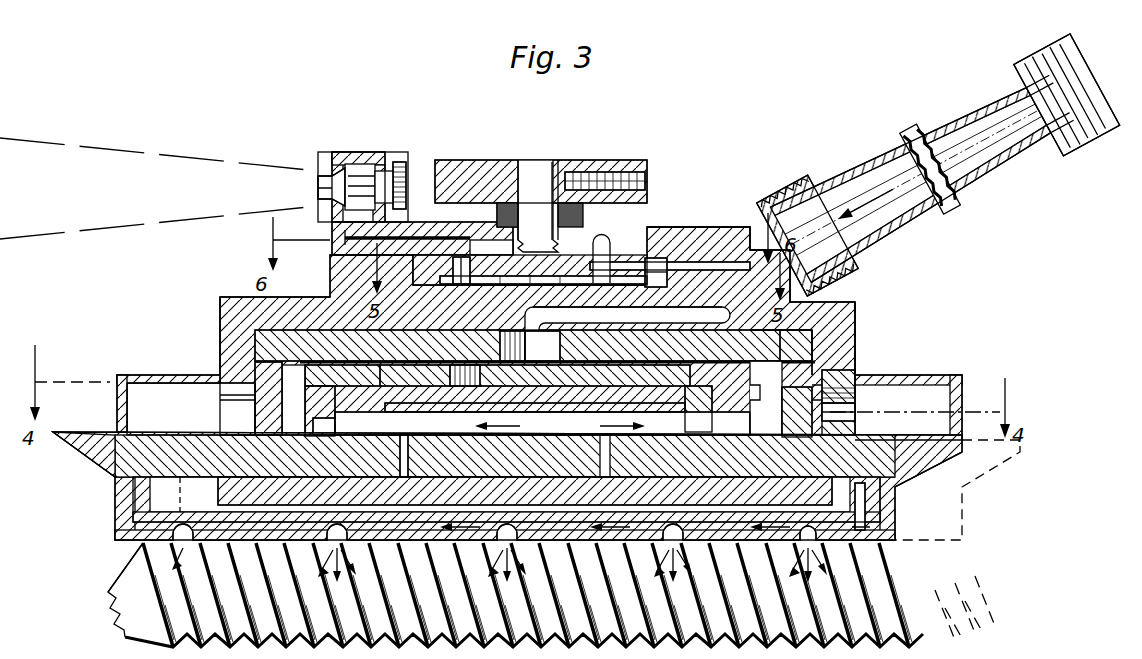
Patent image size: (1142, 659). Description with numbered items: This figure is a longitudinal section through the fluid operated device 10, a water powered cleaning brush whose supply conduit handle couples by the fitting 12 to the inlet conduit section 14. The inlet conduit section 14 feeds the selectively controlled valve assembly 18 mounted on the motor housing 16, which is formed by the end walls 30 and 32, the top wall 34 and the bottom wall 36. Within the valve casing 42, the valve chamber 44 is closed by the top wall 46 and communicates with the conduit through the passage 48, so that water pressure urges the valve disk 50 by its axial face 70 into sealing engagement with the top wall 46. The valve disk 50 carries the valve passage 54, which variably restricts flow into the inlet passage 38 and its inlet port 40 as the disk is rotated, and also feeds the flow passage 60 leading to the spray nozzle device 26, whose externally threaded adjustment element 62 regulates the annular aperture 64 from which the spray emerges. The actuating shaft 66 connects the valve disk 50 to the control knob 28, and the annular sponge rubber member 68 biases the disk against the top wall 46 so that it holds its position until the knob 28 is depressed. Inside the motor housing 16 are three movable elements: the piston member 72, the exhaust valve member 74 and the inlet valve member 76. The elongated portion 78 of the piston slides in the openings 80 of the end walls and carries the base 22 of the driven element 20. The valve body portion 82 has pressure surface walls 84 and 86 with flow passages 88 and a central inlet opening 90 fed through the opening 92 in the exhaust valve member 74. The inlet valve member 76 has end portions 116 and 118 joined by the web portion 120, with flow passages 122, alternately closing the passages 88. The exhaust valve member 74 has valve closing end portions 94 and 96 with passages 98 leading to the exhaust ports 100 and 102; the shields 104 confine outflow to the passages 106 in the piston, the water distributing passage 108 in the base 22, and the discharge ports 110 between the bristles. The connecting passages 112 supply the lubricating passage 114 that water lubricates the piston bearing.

The fluid operated device 10 is at (314, 167).
The fitting 12 is at (1034, 52).
The inlet conduit section 14 is at (858, 172).
The motor housing 16 is at (512, 331).
The valve assembly 18 is at (706, 220).
The driven element 20 is at (928, 603).
The base 22 is at (115, 505).
The spray nozzle device 26 is at (362, 148).
The control knob 28 is at (607, 180).
The end wall 30 is at (847, 346).
The end wall 32 is at (232, 340).
The top wall 34 is at (802, 302).
The bottom wall 36 is at (583, 500).
The inlet passage 38 is at (642, 320).
The inlet port 40 is at (560, 342).
The valve casing 42 is at (330, 280).
The valve chamber 44 is at (670, 236).
The top wall 46 is at (752, 230).
The passage 48 is at (706, 265).
The valve disk 50 is at (452, 272).
The valve passage 54 is at (642, 277).
The flow passage 60 is at (415, 236).
The adjustment element 62 is at (391, 174).
The annular aperture 64 is at (326, 174).
The actuating shaft 66 is at (540, 180).
The annular sponge rubber member 68 is at (505, 205).
The axial face 70 is at (512, 283).
The piston member 72 is at (304, 472).
The exhaust valve member 74 is at (855, 318).
The inlet valve member 76 is at (660, 430).
The elongated portion 78 is at (838, 440).
The openings 80 is at (232, 427).
The valve body portion 82 is at (416, 372).
The pressure surface wall 84 is at (795, 372).
The pressure surface wall 86 is at (297, 385).
The flow passages 88 is at (302, 405).
The inlet opening 90 is at (476, 378).
The opening 92 is at (500, 349).
The valve closing end portion 94 is at (782, 416).
The valve closing end portion 96 is at (268, 422).
The passages 98 is at (797, 378).
The exhaust port 100 is at (858, 403).
The exhaust port 102 is at (228, 402).
The shields 104 is at (962, 390).
The passages 106 is at (872, 490).
The water distributing passage 108 is at (702, 532).
The discharge ports 110 is at (500, 545).
The connecting passages 112 is at (405, 452).
The lubricating passage 114 is at (430, 480).
The end portion 116 is at (685, 392).
The end portion 118 is at (338, 424).
The web portion 120 is at (558, 407).
The flow passages 122 is at (322, 425).